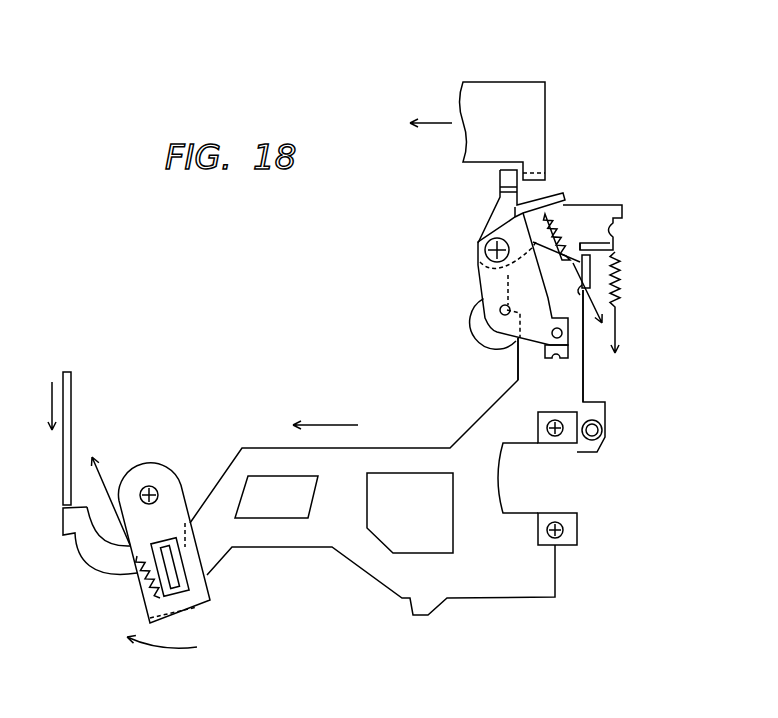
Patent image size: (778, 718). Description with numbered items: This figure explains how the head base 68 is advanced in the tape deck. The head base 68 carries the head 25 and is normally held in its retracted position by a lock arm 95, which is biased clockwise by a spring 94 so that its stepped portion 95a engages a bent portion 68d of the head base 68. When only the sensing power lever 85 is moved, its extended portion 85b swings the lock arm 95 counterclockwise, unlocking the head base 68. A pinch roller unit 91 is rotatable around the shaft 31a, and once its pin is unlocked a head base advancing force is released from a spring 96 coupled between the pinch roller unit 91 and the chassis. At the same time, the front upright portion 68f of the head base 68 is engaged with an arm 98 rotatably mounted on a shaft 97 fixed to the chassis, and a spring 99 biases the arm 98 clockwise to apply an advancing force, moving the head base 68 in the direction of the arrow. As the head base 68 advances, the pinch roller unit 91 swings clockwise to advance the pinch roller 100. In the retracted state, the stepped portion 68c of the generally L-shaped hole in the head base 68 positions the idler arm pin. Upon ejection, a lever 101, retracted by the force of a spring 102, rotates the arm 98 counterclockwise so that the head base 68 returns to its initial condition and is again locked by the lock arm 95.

The sensing power lever 85 is at (512, 85).
The extended portion of the sensing power lever 85b is at (552, 178).
The lock arm 95 is at (487, 222).
The stepped portion of the lock arm 95a is at (583, 242).
The spring 96 is at (556, 216).
The shaft 31a is at (480, 254).
The pinch roller unit 91 is at (469, 289).
The pinch roller 100 is at (478, 332).
The bent portion of the head base 68d is at (592, 272).
The spring 94 is at (619, 292).
The stepped portion of the L-shaped hole 68c is at (551, 358).
The head base 68 is at (584, 388).
The spring 102 is at (604, 431).
The head 25 is at (515, 513).
The lever 101 is at (73, 385).
The shaft 97 is at (152, 487).
The arm 98 is at (88, 551).
The spring 99 is at (142, 594).
The front upright portion of the head base 68f is at (200, 603).